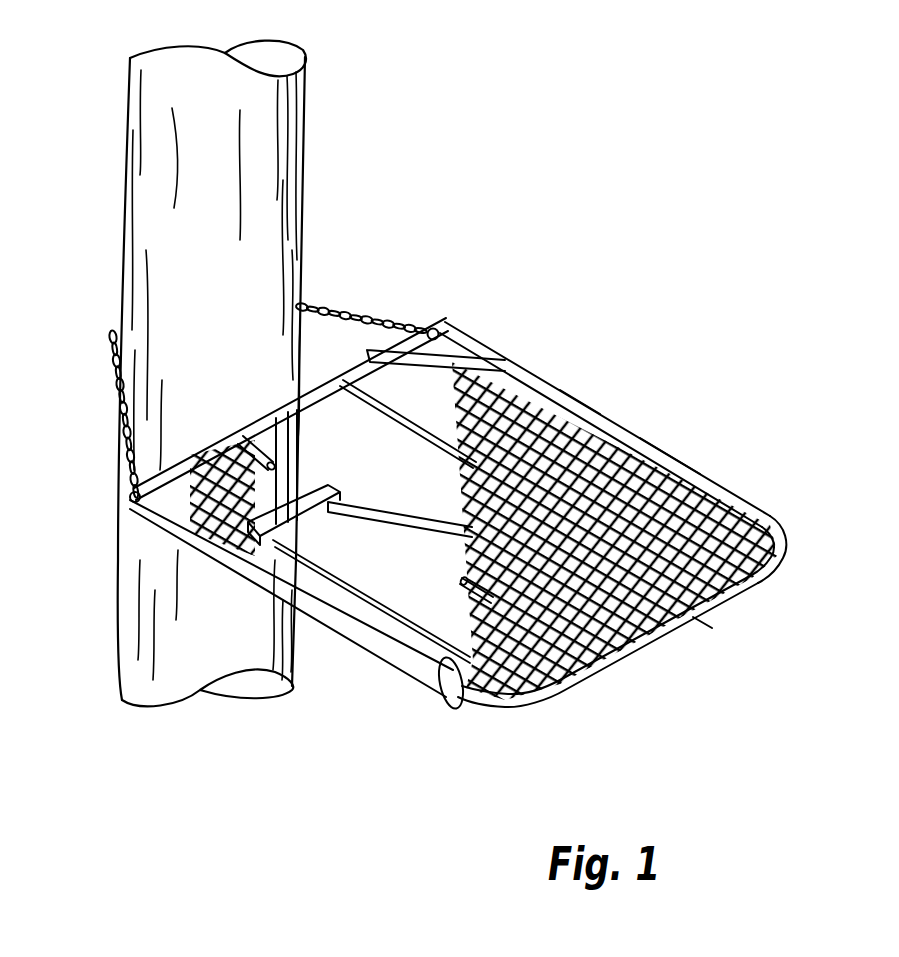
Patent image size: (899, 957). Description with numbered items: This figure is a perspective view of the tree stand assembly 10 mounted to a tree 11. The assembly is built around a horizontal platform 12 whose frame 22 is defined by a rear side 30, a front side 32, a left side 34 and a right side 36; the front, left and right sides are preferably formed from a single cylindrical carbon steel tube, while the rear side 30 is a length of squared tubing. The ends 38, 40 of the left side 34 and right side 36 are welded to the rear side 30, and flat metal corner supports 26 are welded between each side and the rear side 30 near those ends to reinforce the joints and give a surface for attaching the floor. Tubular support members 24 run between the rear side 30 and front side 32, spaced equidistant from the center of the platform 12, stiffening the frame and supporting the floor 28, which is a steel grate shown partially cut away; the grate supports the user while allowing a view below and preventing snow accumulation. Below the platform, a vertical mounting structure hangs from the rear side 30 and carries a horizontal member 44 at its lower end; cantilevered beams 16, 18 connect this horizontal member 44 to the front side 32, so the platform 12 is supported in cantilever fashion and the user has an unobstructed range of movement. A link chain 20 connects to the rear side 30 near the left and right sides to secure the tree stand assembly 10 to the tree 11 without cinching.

The tree stand assembly 10 is at (417, 559).
The tree 11 is at (312, 123).
The horizontal platform 12 is at (502, 534).
The cantilevered beam 16 is at (442, 690).
The cantilevered beam 18 is at (563, 398).
The link chain 20 is at (114, 400).
The frame 22 is at (707, 492).
The support member 24 is at (462, 580).
The corner support 26 is at (446, 357).
The floor 28 is at (672, 472).
The rear side 30 is at (253, 428).
The front side 32 is at (727, 590).
The left side 34 is at (568, 392).
The right side 36 is at (393, 668).
The end 38 is at (443, 326).
The end 40 is at (128, 503).
The horizontal member 44 is at (300, 524).